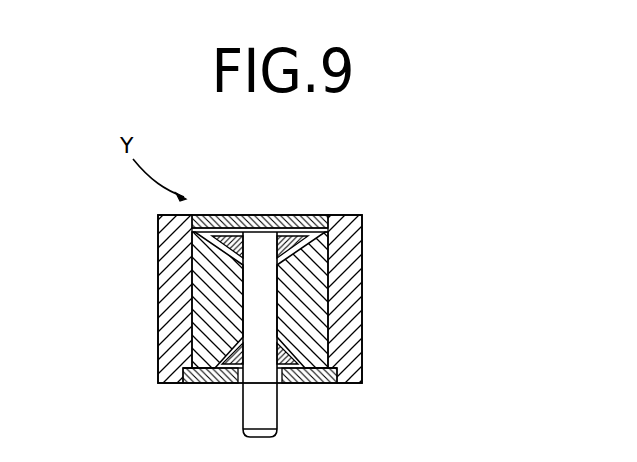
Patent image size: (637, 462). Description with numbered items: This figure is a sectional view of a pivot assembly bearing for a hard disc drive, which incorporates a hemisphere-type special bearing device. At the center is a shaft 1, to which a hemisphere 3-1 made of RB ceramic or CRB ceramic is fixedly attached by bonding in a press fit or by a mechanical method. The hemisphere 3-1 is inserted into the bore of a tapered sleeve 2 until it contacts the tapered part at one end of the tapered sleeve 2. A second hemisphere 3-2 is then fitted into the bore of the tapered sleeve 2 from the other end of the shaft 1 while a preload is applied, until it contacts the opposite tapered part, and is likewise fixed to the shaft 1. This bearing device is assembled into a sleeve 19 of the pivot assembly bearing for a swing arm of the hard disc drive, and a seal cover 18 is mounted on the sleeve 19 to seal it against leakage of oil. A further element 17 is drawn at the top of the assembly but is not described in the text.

The shaft 1 is at (258, 245).
The tapered sleeve 2 is at (312, 293).
The hemisphere 3-1 is at (313, 213).
The hemisphere 3-2 is at (303, 384).
The top cover plate 17 is at (230, 215).
The seal cover 18 is at (212, 384).
The sleeve 19 is at (178, 305).